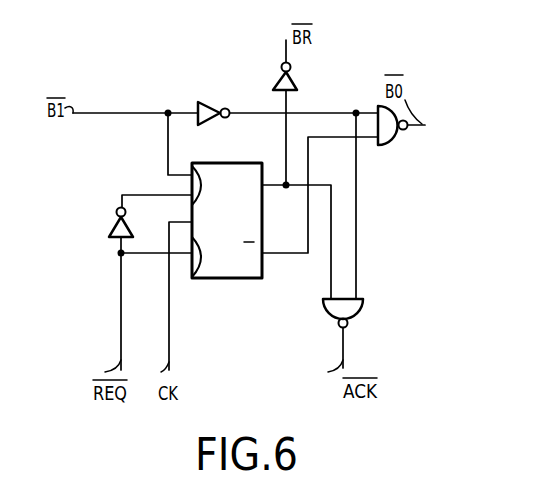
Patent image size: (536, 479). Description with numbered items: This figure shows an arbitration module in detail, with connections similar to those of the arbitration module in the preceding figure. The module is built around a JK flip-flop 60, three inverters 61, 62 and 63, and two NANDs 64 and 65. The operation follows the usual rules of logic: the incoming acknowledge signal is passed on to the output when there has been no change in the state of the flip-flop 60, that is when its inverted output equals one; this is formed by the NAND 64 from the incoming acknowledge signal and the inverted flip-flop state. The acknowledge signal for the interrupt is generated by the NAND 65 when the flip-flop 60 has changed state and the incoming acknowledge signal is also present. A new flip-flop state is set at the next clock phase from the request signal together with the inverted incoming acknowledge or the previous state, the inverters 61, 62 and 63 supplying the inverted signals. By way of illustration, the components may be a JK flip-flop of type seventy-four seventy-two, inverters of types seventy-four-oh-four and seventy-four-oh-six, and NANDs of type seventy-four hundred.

The JK flip-flop 60 is at (226, 279).
The inverter 61 is at (112, 237).
The inverter 62 is at (213, 104).
The inverter 63 is at (294, 83).
The NAND 64 is at (389, 144).
The NAND 65 is at (362, 313).